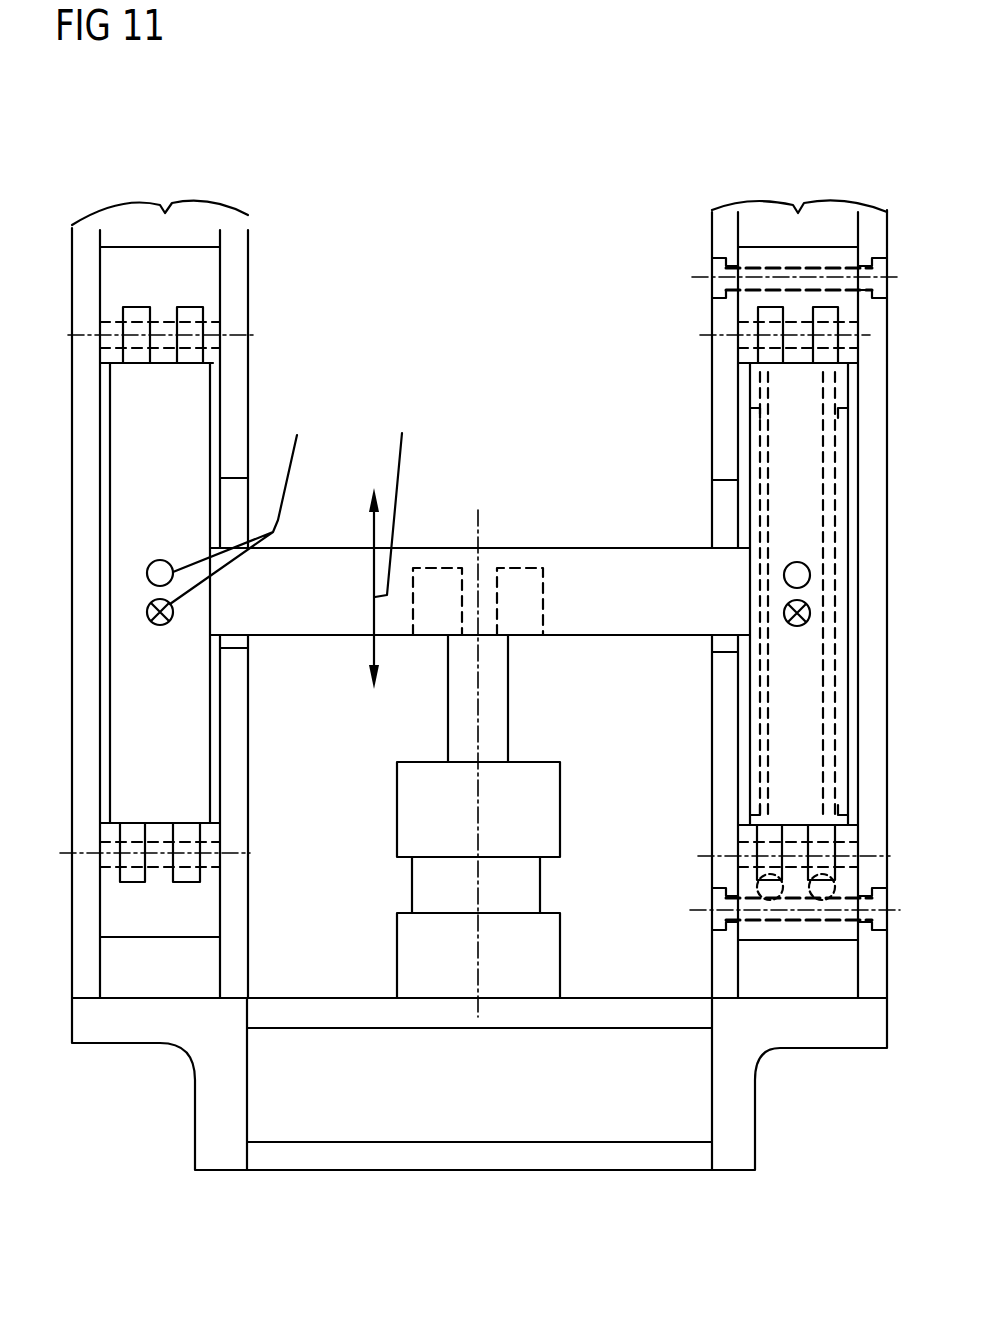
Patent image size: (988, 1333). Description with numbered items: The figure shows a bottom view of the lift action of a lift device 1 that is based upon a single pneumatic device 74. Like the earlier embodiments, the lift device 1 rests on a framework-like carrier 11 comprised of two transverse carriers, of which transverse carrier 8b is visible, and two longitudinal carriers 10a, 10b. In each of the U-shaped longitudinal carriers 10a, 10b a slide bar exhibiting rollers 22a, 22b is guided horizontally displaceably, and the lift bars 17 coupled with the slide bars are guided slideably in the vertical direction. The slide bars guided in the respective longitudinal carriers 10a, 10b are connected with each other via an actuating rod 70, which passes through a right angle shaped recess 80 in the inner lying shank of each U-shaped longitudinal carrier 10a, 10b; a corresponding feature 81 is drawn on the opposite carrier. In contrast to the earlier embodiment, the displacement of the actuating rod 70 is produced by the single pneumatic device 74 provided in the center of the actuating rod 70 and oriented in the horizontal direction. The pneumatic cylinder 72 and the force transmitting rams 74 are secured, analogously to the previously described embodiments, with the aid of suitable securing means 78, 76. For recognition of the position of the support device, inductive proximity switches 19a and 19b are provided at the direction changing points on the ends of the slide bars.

The lift device 1 is at (286, 200).
The transverse carrier 8b is at (72, 1002).
The longitudinal carrier 10a is at (791, 193).
The longitudinal carrier 10b is at (162, 197).
The carrier 11 is at (82, 970).
The lift bar 17 is at (788, 422).
The inductive proximity switch 19a is at (875, 923).
The inductive proximity switch 19b is at (880, 272).
The roller 22a is at (187, 877).
The roller 22b is at (132, 317).
The actuating rod 70 is at (559, 567).
The pneumatic cylinder 72 is at (453, 837).
The pneumatic device 74 is at (480, 782).
The securing means 76 is at (496, 998).
The securing means 78 is at (481, 635).
The right angle shaped recess 80 is at (730, 530).
The left guide channel 81 is at (237, 518).